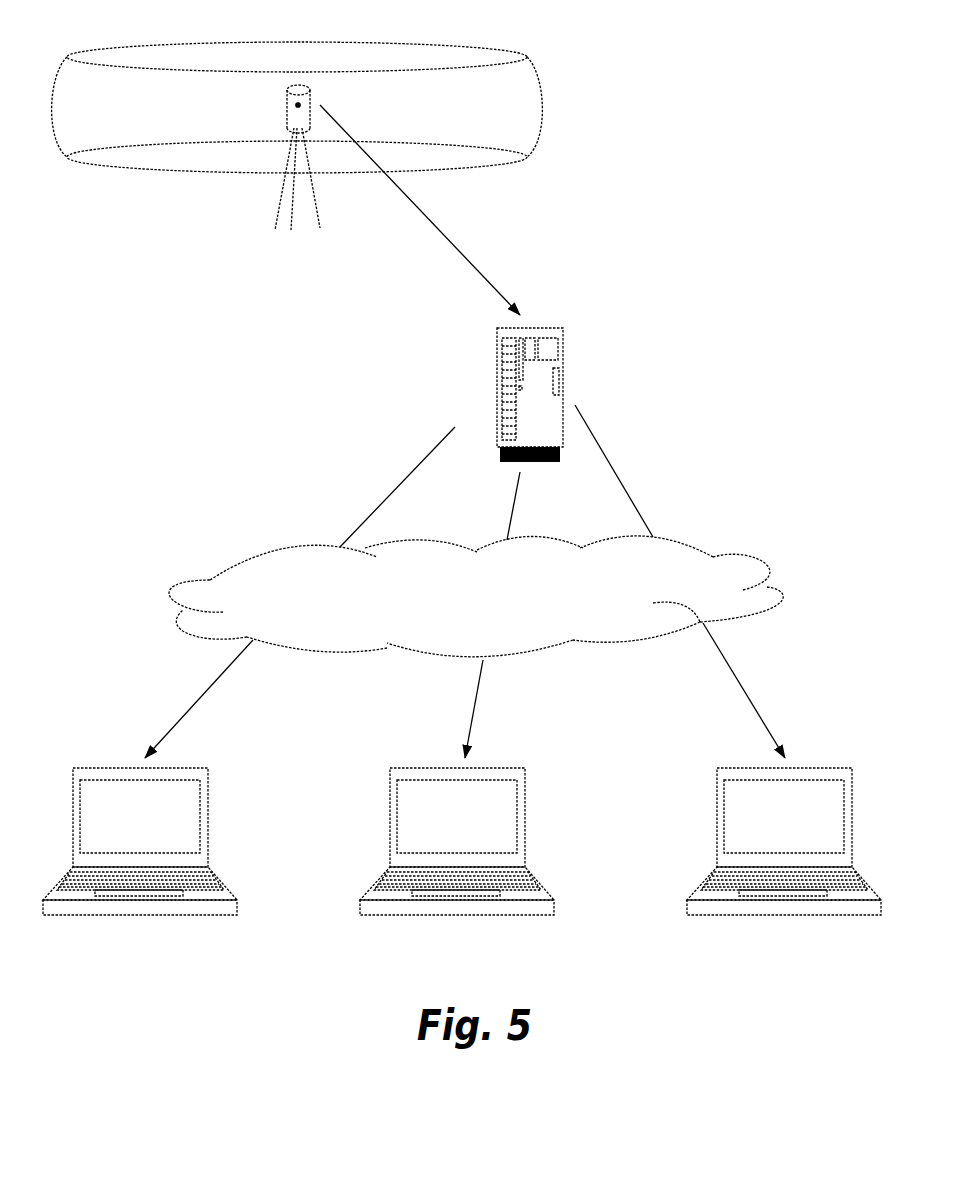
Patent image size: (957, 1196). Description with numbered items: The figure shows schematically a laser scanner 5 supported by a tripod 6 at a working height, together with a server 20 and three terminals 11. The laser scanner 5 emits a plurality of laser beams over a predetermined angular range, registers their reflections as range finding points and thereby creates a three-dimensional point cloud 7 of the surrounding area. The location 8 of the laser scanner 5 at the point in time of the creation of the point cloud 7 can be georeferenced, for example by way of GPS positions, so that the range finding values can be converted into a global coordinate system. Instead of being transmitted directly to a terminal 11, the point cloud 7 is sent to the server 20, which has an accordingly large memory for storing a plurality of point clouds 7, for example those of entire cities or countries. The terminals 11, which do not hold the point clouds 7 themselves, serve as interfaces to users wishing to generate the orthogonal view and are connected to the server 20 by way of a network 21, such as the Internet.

The laser scanner 5 is at (298, 87).
The location of the laser scanner 8 is at (293, 108).
The tripod 6 is at (322, 222).
The 3D point cloud 7 is at (450, 238).
The server 20 is at (567, 352).
The network 21 is at (740, 557).
The terminal 11 is at (187, 915).